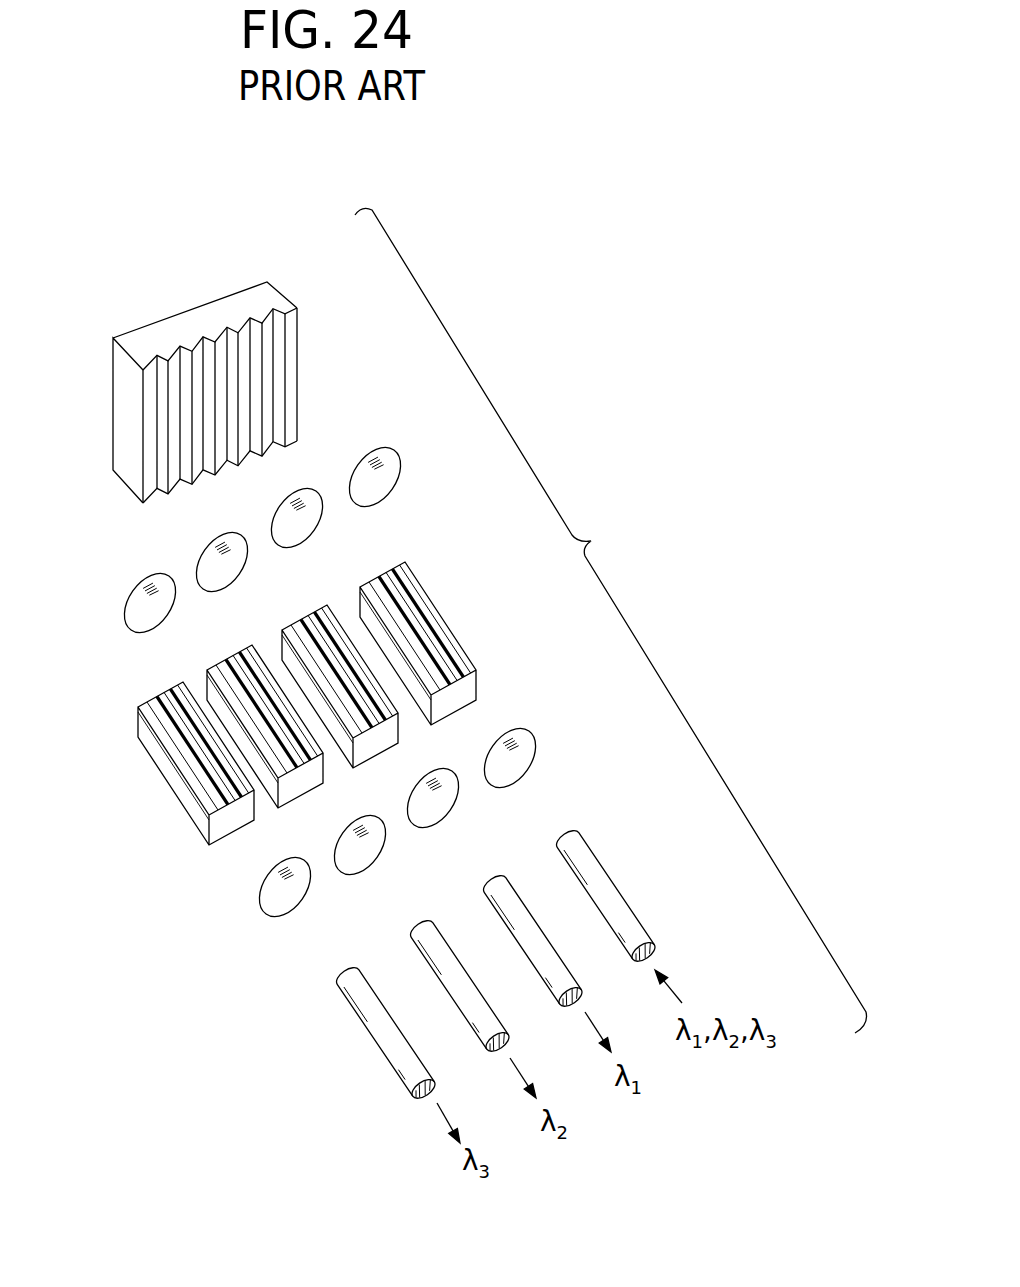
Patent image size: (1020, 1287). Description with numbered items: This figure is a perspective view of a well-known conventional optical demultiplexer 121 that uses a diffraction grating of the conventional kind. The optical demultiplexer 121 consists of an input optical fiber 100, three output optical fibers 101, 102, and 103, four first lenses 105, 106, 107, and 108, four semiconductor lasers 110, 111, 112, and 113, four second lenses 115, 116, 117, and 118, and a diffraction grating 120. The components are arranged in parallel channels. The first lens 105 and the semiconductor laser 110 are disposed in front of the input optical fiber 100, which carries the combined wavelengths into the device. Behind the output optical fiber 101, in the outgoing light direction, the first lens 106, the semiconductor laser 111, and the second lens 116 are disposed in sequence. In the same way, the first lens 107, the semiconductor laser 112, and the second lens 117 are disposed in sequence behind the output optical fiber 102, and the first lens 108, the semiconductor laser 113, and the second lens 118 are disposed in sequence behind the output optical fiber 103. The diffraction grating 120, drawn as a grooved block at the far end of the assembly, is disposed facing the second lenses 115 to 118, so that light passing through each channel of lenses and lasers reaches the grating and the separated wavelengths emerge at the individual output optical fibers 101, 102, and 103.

The input optical fiber 100 is at (632, 927).
The output optical fiber 101 is at (536, 973).
The output optical fiber 102 is at (471, 1033).
The output optical fiber 103 is at (370, 1040).
The first lens 105 is at (520, 765).
The first lens 106 is at (433, 817).
The first lens 107 is at (363, 857).
The first lens 108 is at (278, 902).
The semiconductor laser 110 is at (458, 643).
The semiconductor laser 111 is at (390, 745).
The semiconductor laser 112 is at (316, 786).
The semiconductor laser 113 is at (206, 840).
The second lens 115 is at (385, 477).
The second lens 116 is at (313, 525).
The second lens 117 is at (240, 567).
The second lens 118 is at (130, 622).
The diffraction grating 120 is at (207, 318).
The optical demultiplexer 121 is at (588, 542).